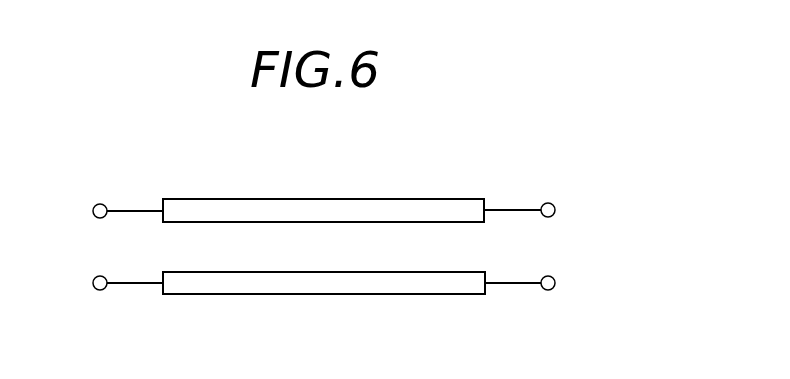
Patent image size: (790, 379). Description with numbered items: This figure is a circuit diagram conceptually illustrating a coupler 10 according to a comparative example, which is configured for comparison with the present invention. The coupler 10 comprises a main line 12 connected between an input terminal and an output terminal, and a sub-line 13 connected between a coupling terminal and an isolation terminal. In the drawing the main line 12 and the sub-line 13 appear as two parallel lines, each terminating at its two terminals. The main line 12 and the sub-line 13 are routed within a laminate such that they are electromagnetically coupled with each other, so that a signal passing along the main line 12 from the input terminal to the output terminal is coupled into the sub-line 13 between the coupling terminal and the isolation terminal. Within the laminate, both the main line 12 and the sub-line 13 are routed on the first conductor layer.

The coupler 10 is at (464, 162).
The main line 12 is at (330, 295).
The sub-line 13 is at (322, 199).